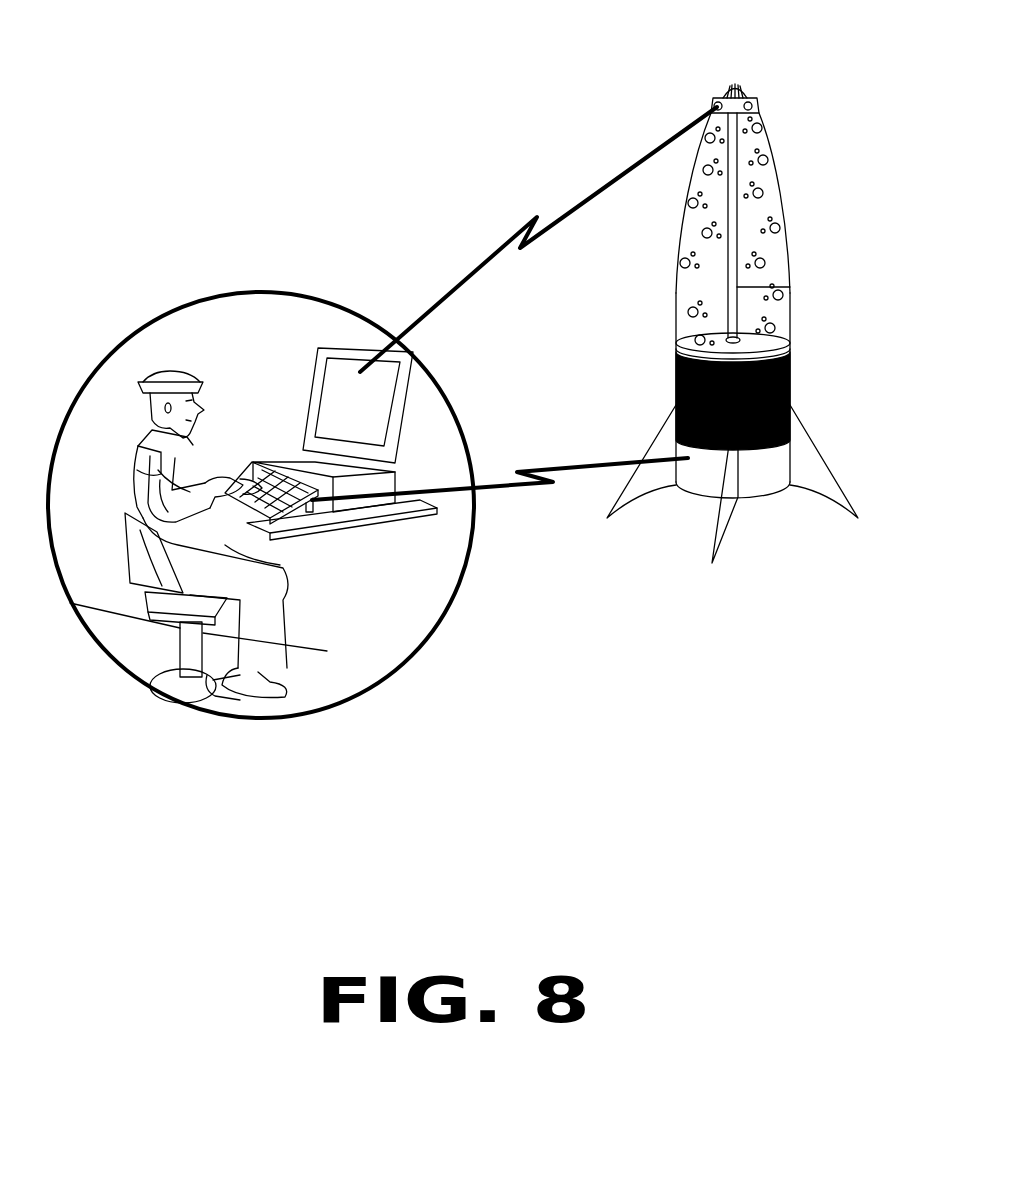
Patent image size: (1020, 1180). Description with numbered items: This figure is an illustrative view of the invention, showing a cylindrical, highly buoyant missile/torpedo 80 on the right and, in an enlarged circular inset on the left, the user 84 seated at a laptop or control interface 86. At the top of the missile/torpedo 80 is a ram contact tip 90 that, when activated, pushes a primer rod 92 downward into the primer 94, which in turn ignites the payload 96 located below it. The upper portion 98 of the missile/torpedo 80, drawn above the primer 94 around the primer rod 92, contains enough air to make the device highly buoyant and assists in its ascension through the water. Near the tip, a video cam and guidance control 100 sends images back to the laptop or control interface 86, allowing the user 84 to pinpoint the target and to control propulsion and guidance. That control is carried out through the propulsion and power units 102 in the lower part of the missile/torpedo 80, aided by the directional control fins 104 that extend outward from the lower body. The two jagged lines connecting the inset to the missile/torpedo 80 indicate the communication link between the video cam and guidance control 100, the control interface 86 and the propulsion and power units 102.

The missile/torpedo 80 is at (830, 192).
The user 84 is at (173, 377).
The laptop or control interface 86 is at (268, 490).
The ram contact tip 90 is at (732, 84).
The primer rod 92 is at (772, 287).
The primer 94 is at (705, 336).
The payload 96 is at (790, 372).
The upper portion 98 is at (775, 248).
The video cam and guidance control 100 is at (750, 103).
The propulsion and power units 102 is at (768, 480).
The directional control fins 104 is at (807, 445).